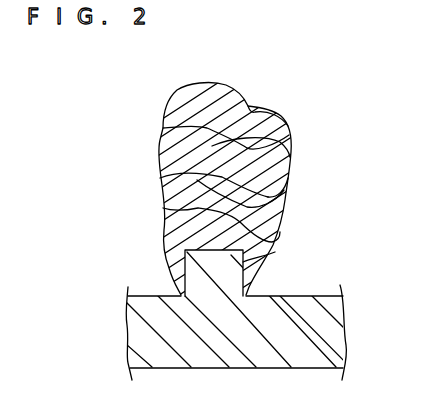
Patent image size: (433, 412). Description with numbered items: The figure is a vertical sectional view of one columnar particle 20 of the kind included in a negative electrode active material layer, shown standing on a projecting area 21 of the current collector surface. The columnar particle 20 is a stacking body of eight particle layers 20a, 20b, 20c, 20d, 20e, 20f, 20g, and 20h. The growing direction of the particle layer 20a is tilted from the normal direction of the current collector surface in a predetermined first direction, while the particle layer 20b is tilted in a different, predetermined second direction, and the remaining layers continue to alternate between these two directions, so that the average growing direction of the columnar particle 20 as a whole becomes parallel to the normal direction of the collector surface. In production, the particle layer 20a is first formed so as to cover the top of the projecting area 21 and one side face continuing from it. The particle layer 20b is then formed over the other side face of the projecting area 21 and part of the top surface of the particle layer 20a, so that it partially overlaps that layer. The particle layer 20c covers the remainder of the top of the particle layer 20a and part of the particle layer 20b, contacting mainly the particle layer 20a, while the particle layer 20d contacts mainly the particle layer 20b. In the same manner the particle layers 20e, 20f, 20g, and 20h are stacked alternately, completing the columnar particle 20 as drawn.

The columnar particle 20 is at (351, 55).
The particle layer 20a is at (258, 257).
The particle layer 20b is at (270, 235).
The particle layer 20c is at (257, 213).
The particle layer 20d is at (280, 179).
The particle layer 20e is at (287, 153).
The particle layer 20f is at (283, 130).
The particle layer 20g is at (253, 111).
The particle layer 20h is at (245, 100).
The projecting area 21 is at (192, 279).